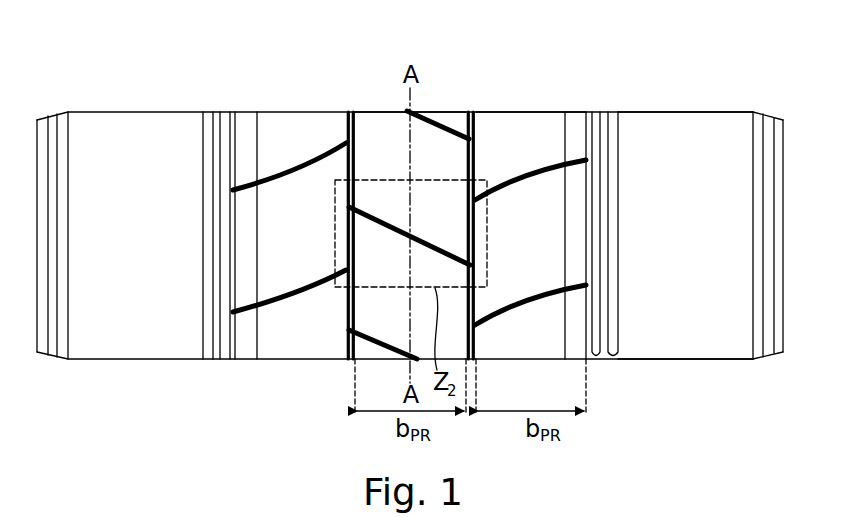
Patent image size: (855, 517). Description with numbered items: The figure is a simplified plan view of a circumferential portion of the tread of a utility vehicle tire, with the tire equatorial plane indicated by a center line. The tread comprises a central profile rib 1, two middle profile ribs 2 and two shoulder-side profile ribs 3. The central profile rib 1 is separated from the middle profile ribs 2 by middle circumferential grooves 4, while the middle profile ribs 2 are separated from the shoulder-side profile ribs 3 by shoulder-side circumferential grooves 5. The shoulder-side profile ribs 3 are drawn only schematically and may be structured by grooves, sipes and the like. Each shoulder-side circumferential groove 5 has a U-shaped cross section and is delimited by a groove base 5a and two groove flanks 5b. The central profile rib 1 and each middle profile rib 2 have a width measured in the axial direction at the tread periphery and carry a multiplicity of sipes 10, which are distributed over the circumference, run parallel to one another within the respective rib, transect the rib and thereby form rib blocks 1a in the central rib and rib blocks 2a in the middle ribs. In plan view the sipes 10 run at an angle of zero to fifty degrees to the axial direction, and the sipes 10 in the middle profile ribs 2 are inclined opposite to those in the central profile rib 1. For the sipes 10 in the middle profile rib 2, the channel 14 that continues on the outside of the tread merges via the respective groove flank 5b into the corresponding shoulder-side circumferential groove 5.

The central profile rib 1 is at (443, 96).
The rib blocks 1a is at (385, 118).
The middle profile ribs 2 is at (529, 94).
The rib blocks 2a is at (548, 115).
The shoulder-side profile ribs 3 is at (701, 96).
The middle circumferential grooves 4 is at (470, 112).
The shoulder-side circumferential grooves 5 is at (623, 237).
The groove base 5a is at (592, 358).
The groove flanks 5b is at (620, 353).
The sipes 10 is at (295, 148).
The channel 14 is at (565, 283).